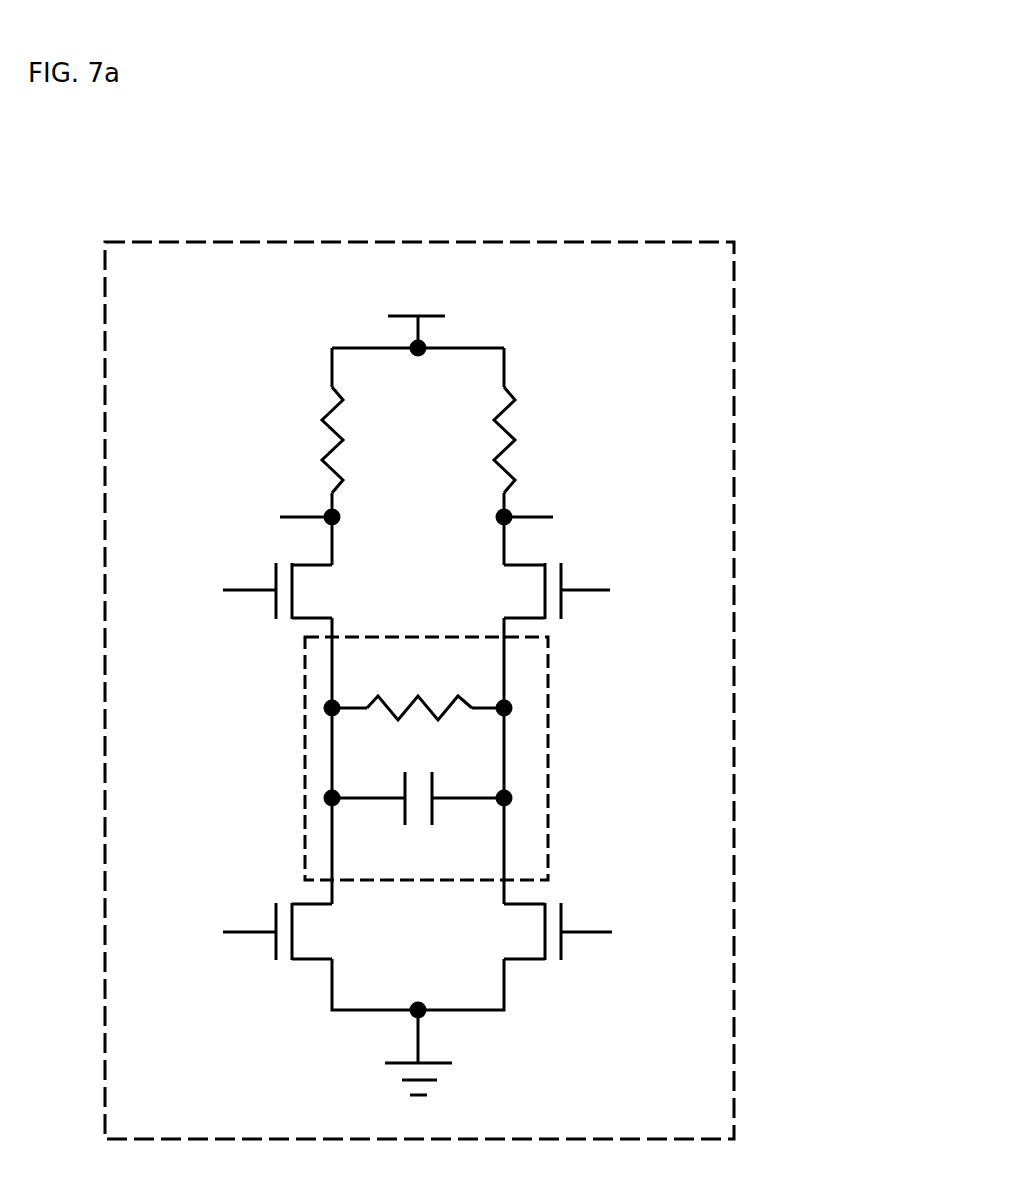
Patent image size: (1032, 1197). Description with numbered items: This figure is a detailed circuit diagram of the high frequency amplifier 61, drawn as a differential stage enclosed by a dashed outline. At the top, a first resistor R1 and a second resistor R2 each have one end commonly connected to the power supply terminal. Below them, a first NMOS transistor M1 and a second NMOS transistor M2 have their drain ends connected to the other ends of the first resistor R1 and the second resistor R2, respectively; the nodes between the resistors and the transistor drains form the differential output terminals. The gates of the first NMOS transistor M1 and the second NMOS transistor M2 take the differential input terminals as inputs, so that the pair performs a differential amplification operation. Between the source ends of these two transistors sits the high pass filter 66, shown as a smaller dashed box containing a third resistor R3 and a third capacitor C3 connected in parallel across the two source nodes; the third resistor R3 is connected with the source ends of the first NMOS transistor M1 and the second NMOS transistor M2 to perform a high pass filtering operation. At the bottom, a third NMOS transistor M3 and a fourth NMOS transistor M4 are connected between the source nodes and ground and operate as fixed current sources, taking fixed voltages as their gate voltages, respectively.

The high frequency amplifier 61 is at (516, 690).
The high pass filter 66 is at (590, 758).
The first resistor R1 is at (307, 440).
The second resistor R2 is at (527, 440).
The third resistor R3 is at (418, 682).
The third capacitor C3 is at (418, 819).
The first NMOS transistor M1 is at (277, 619).
The second NMOS transistor M2 is at (557, 619).
The third NMOS transistor M3 is at (277, 954).
The fourth NMOS transistor M4 is at (558, 954).